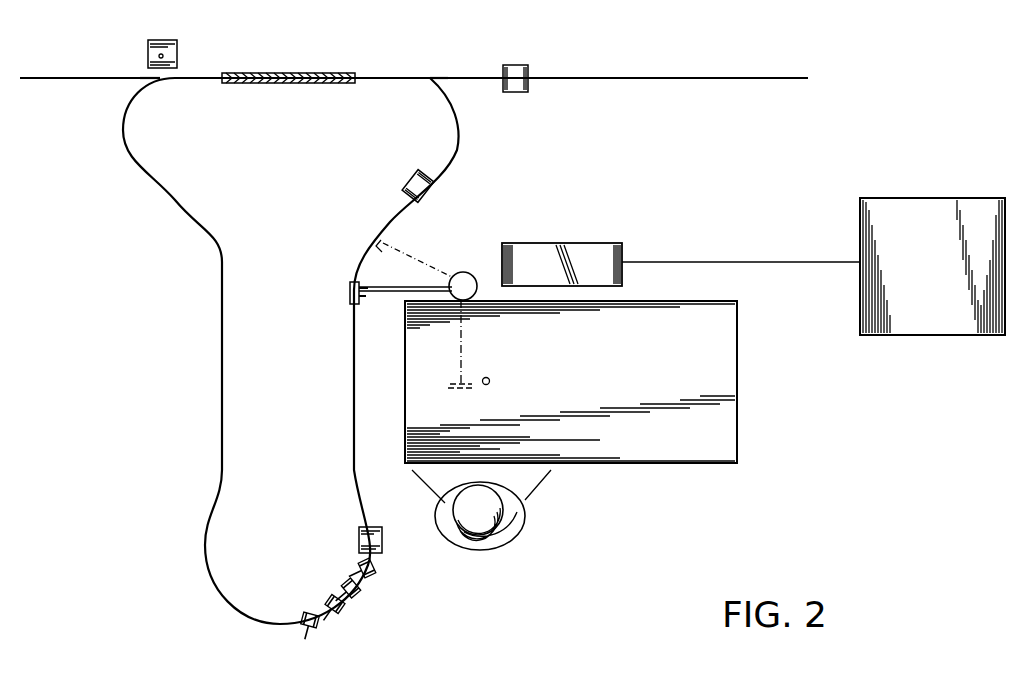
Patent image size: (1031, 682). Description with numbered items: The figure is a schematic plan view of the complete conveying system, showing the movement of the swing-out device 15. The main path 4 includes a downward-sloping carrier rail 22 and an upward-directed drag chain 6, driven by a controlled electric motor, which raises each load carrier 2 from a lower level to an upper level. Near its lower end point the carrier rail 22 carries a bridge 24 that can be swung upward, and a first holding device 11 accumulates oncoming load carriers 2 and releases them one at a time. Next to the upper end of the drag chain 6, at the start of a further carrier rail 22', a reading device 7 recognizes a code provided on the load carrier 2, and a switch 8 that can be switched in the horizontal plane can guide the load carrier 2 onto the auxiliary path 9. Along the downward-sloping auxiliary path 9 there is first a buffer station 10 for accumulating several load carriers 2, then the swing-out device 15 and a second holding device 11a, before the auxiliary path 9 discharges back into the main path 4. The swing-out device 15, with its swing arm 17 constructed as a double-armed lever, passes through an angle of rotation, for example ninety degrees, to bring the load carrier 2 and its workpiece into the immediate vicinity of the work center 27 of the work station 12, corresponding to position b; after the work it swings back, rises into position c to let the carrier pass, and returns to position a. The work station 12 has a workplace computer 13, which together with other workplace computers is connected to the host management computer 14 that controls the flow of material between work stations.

The load carrier 2 is at (350, 292).
The main path 4 is at (648, 68).
The drag chain 6 is at (295, 75).
The reading device 7 is at (178, 54).
The switch 8 is at (154, 76).
The auxiliary path 9 is at (168, 208).
The buffer station 10 is at (382, 545).
The first holding device 11 is at (520, 68).
The second holding device 11a is at (432, 196).
The work station 12 is at (737, 426).
The workplace computer 13 is at (576, 246).
The management computer 14 is at (872, 218).
The swing-out device 15 is at (452, 302).
The swing arm 17 is at (398, 295).
The carrier rail 22 is at (684, 55).
The further carrier rail 22' is at (84, 55).
The bridge 24 is at (434, 76).
The work center 27 is at (490, 380).